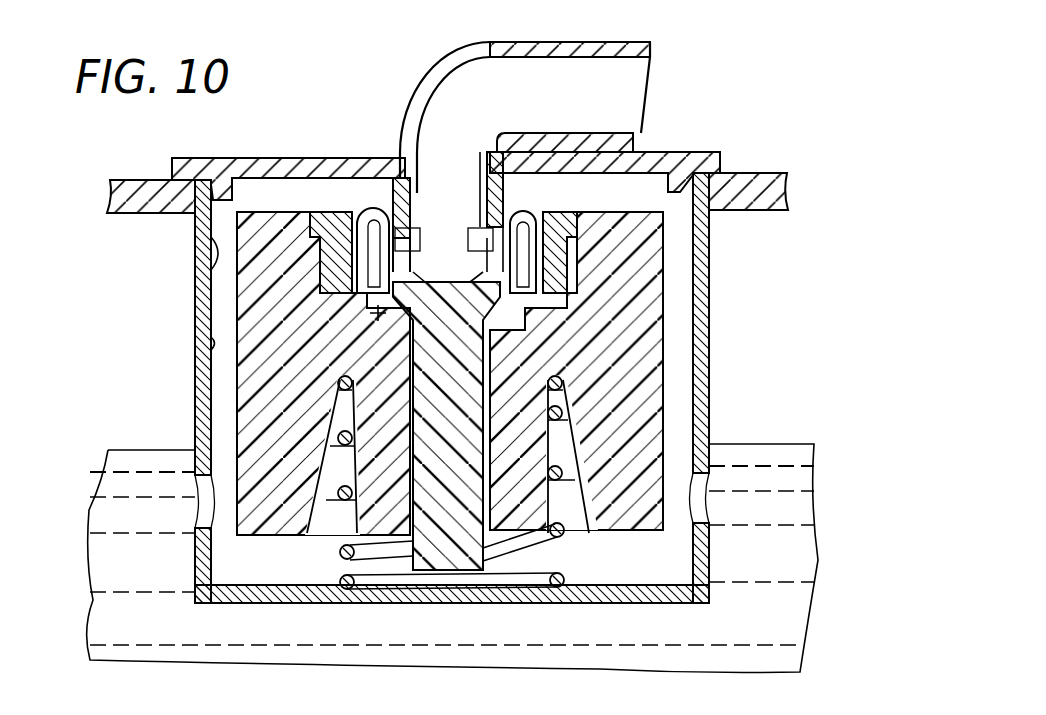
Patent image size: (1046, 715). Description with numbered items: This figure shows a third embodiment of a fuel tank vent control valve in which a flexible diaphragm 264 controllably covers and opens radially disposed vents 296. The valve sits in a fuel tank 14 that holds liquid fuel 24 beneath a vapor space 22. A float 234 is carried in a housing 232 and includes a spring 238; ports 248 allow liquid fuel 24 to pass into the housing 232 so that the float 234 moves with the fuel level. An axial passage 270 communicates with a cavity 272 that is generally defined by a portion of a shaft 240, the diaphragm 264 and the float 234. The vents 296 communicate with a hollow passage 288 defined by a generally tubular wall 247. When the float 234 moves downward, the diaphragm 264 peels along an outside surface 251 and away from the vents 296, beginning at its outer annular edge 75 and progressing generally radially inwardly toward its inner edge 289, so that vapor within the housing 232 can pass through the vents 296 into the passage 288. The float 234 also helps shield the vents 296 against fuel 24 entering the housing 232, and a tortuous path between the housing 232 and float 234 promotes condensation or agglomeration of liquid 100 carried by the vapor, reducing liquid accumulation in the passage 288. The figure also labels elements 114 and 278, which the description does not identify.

The fuel tank 14 is at (140, 178).
The vapor space 22 is at (76, 320).
The liquid fuel 24 is at (108, 450).
The outer annular edge 75 is at (485, 318).
The liquid 100 is at (195, 233).
The annular gap 114 is at (223, 383).
The housing 232 is at (194, 428).
The float 234 is at (248, 315).
The spring 238 is at (366, 585).
The shaft 240 is at (520, 316).
The tubular wall 247 is at (497, 183).
The ports 248 is at (205, 505).
The outside surface 251 is at (372, 210).
The flexible diaphragm 264 is at (395, 185).
The axial passage 270 is at (418, 572).
The cavity 272 is at (377, 313).
The left seal 278 is at (360, 212).
The hollow passage 288 is at (410, 160).
The inner edge 289 is at (413, 272).
The vents 296 is at (453, 233).